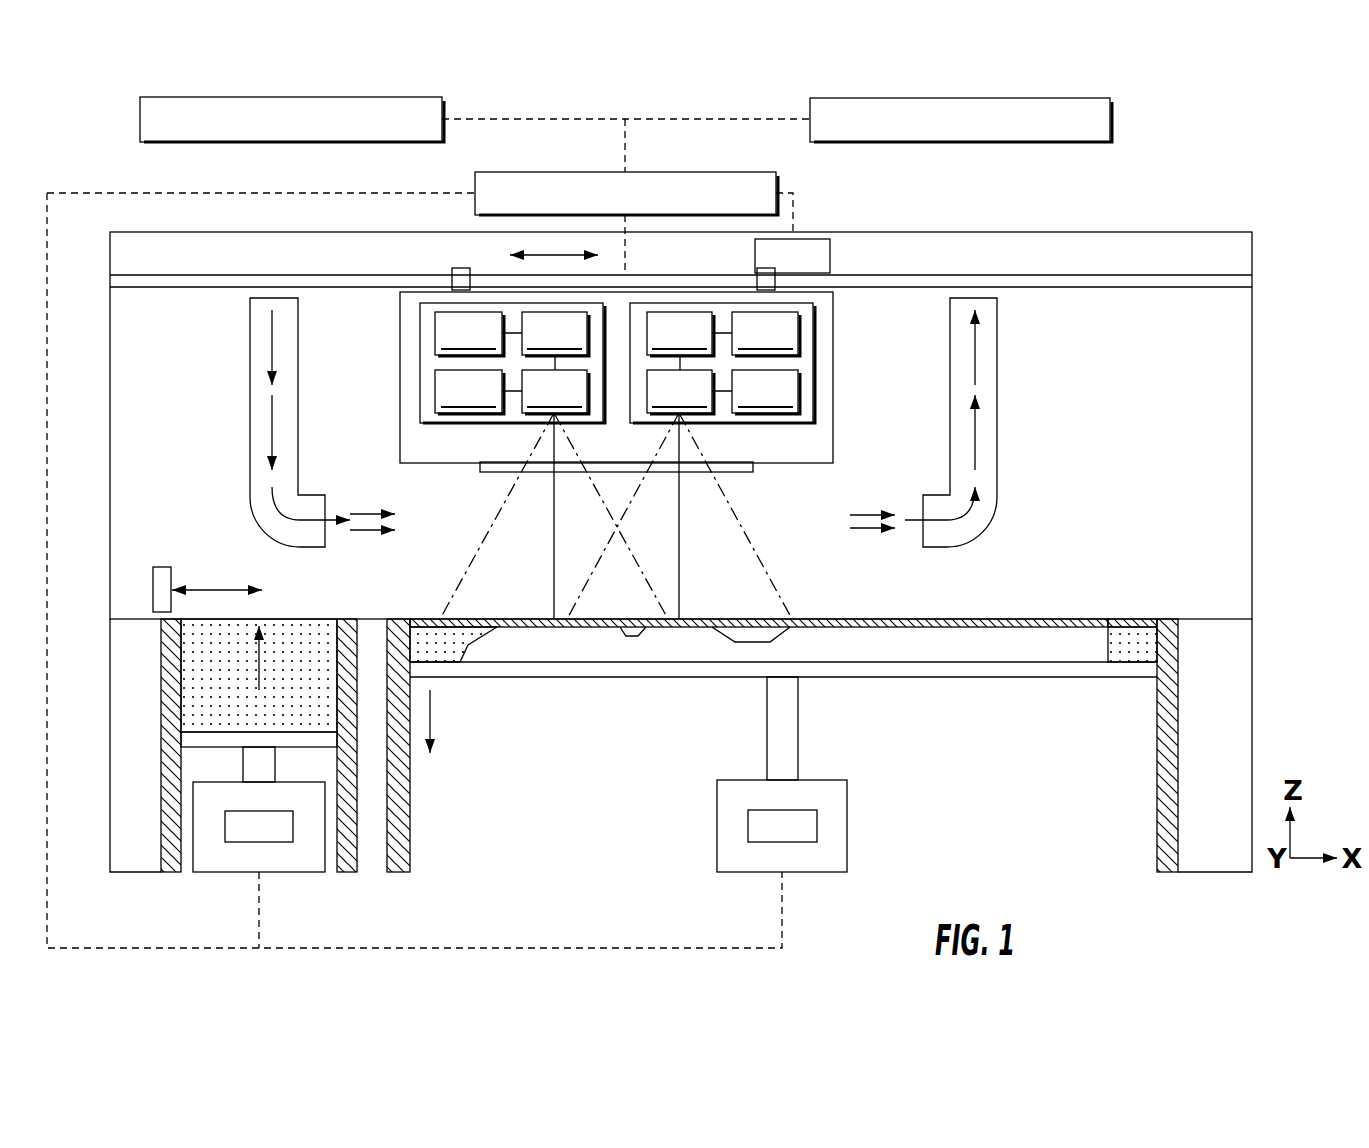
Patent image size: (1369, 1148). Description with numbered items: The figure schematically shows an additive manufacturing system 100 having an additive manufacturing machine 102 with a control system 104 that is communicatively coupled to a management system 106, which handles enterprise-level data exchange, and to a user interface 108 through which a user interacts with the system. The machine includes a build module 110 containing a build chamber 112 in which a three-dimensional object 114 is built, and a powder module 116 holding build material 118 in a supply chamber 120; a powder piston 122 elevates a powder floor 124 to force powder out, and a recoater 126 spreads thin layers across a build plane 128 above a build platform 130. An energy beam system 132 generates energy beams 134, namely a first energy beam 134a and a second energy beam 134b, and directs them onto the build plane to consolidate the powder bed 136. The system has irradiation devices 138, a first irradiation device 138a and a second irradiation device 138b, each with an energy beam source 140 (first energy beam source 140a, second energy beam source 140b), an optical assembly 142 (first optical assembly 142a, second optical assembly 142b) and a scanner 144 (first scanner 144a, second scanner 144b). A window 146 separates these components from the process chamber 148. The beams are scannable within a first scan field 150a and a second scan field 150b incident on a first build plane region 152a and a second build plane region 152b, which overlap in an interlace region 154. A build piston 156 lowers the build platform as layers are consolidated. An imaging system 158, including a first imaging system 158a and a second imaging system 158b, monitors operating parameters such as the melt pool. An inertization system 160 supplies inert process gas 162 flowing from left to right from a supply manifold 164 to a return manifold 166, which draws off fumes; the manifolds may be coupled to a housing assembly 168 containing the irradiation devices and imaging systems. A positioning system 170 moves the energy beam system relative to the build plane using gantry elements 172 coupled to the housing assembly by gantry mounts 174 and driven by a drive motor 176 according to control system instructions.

The additive manufacturing system 100 is at (722, 92).
The additive manufacturing machine 102 is at (681, 519).
The control system 104 is at (715, 172).
The management system 106 is at (1052, 97).
The user interface 108 is at (207, 97).
The build module 110 is at (774, 750).
The build chamber 112 is at (437, 634).
The three-dimensional object 114 is at (783, 617).
The powder module 116 is at (686, 745).
The build material 118 is at (302, 622).
The supply chamber 120 is at (196, 675).
The powder piston 122 is at (275, 760).
The powder floor 124 is at (265, 730).
The recoater 126 is at (162, 567).
The build plane 128 is at (612, 618).
The build platform 130 is at (823, 680).
The energy beam system 132 is at (398, 398).
The energy beams 134 is at (600, 485).
The first energy beam 134a is at (553, 497).
The second energy beam 134b is at (680, 482).
The powder bed 136 is at (878, 620).
The irradiation devices 138 is at (610, 376).
The first irradiation device 138a is at (457, 363).
The second irradiation device 138b is at (770, 363).
The energy beam source 140 is at (505, 305).
The first energy beam source 140a is at (469, 334).
The second energy beam source 140b is at (680, 334).
The optical assembly 142 is at (802, 308).
The first optical assembly 142a is at (555, 334).
The second optical assembly 142b is at (766, 334).
The scanner 144 is at (540, 420).
The first scanner 144a is at (555, 392).
The second scanner 144b is at (680, 392).
The window 146 is at (742, 461).
The process chamber 148 is at (115, 405).
The first scan field 150a is at (495, 508).
The second scan field 150b is at (745, 508).
The first build plane region 152a is at (493, 578).
The second build plane region 152b is at (745, 578).
The interlace region 154 is at (628, 598).
The build piston 156 is at (767, 750).
The imaging system 158 is at (470, 420).
The first imaging system 158a is at (469, 392).
The second imaging system 158b is at (766, 392).
The inertization system 160 is at (232, 470).
The inert process gas 162 is at (272, 335).
The supply manifold 164 is at (250, 440).
The return manifold 166 is at (997, 445).
The housing assembly 168 is at (835, 395).
The positioning system 170 is at (860, 297).
The gantry elements 172 is at (955, 274).
The gantry mounts 174 is at (452, 276).
The drive motor 176 is at (770, 270).